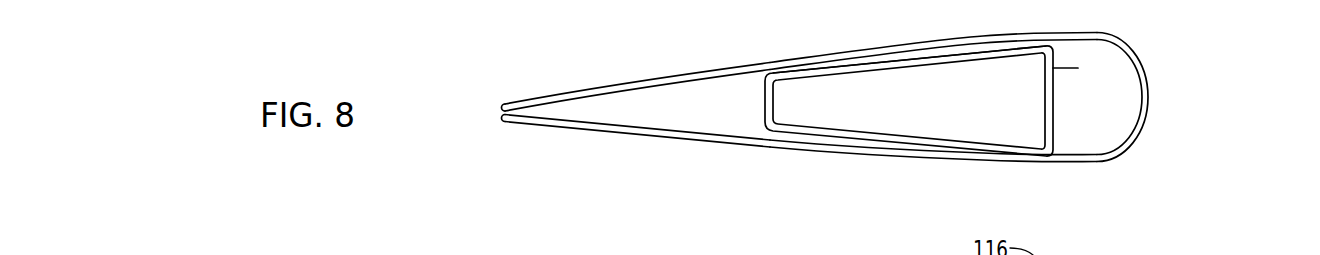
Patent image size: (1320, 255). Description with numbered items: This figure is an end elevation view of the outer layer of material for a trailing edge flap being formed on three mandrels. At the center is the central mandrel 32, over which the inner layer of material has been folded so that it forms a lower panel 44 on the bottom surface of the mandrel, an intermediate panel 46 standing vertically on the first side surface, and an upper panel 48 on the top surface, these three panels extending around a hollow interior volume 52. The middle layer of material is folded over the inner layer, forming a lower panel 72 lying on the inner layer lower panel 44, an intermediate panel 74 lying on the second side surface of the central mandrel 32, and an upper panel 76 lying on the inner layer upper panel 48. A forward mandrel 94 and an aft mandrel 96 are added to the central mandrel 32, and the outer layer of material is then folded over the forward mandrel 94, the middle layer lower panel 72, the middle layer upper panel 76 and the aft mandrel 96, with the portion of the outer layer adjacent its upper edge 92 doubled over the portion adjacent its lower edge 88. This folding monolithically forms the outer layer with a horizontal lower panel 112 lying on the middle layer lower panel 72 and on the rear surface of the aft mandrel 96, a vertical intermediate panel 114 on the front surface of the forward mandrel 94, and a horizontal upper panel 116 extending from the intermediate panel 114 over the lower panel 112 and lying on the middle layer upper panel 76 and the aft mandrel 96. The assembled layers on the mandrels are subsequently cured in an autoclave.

The central mandrel 32 is at (958, 85).
The lower panel of the inner layer 44 is at (852, 143).
The intermediate panel of the inner layer 46 is at (764, 88).
The upper panel of the inner layer 48 is at (823, 68).
The hollow interior volume 52 is at (1018, 109).
The lower panel of the middle layer 72 is at (933, 157).
The intermediate panel of the middle layer 74 is at (1078, 68).
The upper panel of the middle layer 76 is at (983, 44).
The lower edge of the outer layer 88 is at (505, 117).
The upper edge of the outer layer 92 is at (505, 107).
The forward mandrel 94 is at (1120, 94).
The aft mandrel 96 is at (617, 102).
The lower panel of the outer layer 112 is at (1007, 163).
The intermediate panel of the outer layer 114 is at (1149, 107).
The upper panel of the outer layer 116 is at (898, 47).